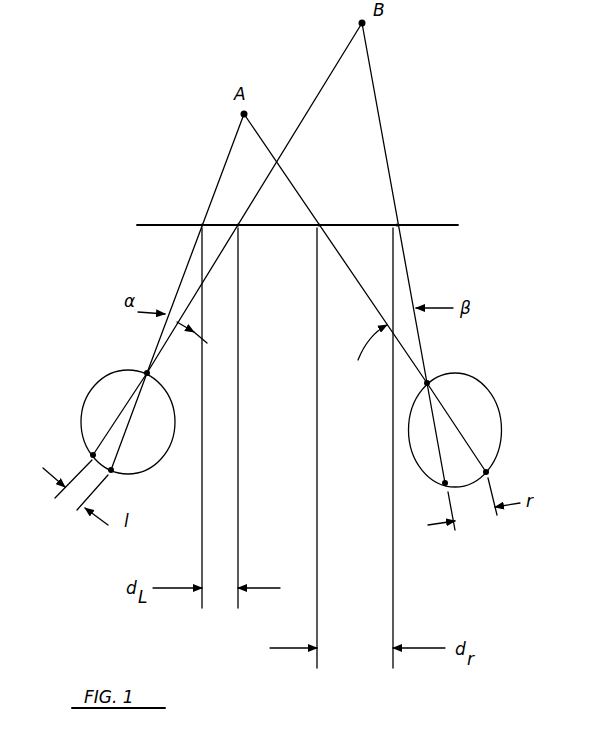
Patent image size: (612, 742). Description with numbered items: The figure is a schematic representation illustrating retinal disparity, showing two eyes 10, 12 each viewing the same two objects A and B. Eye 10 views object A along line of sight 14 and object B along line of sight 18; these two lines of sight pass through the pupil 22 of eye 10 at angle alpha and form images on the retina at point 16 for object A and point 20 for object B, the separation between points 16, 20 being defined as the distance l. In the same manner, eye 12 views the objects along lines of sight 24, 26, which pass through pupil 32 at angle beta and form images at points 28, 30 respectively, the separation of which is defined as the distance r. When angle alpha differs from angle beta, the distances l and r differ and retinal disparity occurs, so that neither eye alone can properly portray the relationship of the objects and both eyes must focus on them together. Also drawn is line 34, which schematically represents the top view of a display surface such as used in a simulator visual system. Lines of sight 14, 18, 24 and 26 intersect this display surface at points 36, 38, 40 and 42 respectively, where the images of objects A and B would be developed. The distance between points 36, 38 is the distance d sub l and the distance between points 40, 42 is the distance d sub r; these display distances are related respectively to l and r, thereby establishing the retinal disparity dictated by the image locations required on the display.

The eye 10 is at (85, 410).
The eye 12 is at (498, 418).
The line of sight 14 is at (218, 180).
The point 16 is at (111, 470).
The line of sight 18 is at (306, 113).
The point 20 is at (93, 455).
The pupil 22 is at (147, 373).
The line of sight 24 is at (303, 200).
The line of sight 26 is at (392, 192).
The point 28 is at (486, 472).
The point 30 is at (445, 483).
The pupil 32 is at (427, 383).
The line 34 is at (443, 225).
The point 36 is at (202, 227).
The point 38 is at (240, 227).
The point 40 is at (319, 226).
The point 42 is at (397, 226).